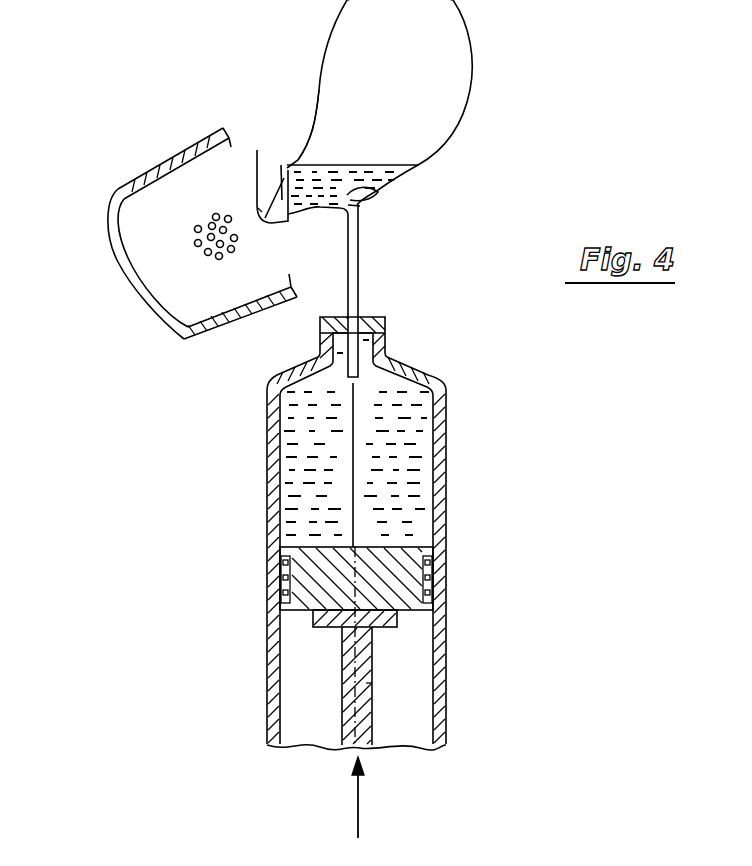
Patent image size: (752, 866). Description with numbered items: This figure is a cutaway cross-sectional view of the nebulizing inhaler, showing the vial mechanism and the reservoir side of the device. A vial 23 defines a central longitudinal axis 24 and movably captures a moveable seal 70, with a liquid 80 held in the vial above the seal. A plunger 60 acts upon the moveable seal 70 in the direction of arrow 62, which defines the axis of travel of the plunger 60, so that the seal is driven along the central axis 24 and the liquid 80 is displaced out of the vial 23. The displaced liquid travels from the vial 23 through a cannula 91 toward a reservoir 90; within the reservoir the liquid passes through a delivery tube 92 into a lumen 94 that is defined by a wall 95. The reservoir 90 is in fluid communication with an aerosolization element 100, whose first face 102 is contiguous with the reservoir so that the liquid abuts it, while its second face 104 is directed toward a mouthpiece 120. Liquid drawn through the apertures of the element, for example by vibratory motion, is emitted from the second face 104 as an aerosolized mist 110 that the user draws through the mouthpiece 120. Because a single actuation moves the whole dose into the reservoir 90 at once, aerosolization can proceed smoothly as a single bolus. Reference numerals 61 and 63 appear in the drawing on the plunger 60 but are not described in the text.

The vial 23 is at (445, 410).
The central longitudinal axis 24 is at (355, 468).
The plunger 60 is at (366, 683).
The plunger stem 61 is at (343, 677).
The arrow 62 is at (358, 802).
The plunger flange 63 is at (340, 626).
The moveable seal 70 is at (386, 567).
The liquid 80 is at (366, 178).
The reservoir 90 is at (473, 70).
The cannula 91 is at (358, 270).
The delivery tube 92 is at (360, 206).
The lumen 94 is at (380, 192).
The wall 95 is at (318, 118).
The aerosolization element 100 is at (257, 150).
The first face 102 is at (281, 165).
The second face 104 is at (258, 208).
The aerosolized mist 110 is at (194, 257).
The mouthpiece 120 is at (171, 163).